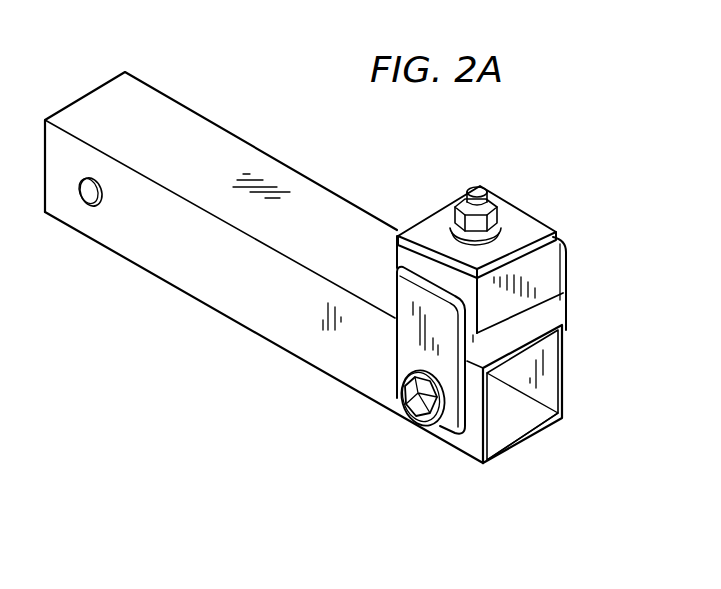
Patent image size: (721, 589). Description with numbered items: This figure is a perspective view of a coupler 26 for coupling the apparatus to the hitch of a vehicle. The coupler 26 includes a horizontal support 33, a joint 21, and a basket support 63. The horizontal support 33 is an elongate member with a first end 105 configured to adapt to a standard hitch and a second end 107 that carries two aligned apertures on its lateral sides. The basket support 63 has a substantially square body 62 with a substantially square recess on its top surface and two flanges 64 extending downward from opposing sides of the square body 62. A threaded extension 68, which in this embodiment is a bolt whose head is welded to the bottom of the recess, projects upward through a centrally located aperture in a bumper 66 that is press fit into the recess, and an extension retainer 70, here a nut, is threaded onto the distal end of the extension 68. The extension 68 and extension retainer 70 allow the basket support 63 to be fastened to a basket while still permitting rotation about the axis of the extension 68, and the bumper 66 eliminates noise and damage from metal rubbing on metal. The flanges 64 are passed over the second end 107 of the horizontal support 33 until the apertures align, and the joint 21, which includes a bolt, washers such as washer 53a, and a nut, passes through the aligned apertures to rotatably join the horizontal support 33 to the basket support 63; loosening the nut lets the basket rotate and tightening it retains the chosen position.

The coupler 26 is at (186, 421).
The horizontal support 33 is at (193, 286).
The first end 105 is at (110, 113).
The second end 107 is at (473, 447).
The basket support 63 is at (613, 298).
The square body 62 is at (547, 273).
The bumper 66 is at (438, 215).
The threaded extension 68 is at (475, 193).
The extension retainer 70 is at (500, 216).
The flanges 64 is at (408, 343).
The joint 21 is at (417, 408).
The washer 53a is at (432, 420).